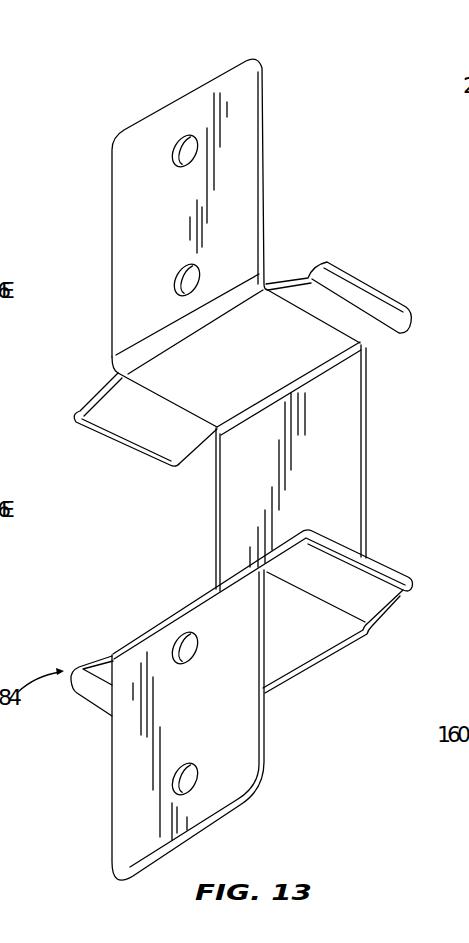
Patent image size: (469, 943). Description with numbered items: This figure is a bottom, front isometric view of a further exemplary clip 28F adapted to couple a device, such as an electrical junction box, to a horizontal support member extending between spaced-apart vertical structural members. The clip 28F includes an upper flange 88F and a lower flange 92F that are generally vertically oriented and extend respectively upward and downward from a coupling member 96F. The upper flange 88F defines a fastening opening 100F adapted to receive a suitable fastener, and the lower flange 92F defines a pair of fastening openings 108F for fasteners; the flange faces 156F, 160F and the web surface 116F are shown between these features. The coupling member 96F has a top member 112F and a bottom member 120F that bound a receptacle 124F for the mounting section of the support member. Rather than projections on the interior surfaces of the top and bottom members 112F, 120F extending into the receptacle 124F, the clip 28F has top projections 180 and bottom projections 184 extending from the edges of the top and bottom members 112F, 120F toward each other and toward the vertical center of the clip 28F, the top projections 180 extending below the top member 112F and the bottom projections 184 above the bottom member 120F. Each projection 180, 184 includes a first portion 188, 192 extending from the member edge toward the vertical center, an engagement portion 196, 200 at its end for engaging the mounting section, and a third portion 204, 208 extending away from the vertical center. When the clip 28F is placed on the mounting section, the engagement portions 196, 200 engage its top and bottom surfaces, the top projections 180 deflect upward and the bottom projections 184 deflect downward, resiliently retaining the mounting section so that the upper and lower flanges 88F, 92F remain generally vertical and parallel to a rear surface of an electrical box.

The clip 28F is at (330, 104).
The upper flange 88F is at (110, 149).
The lower flange 92F is at (267, 744).
The coupling member 96F is at (377, 398).
The fastening opening 100F is at (192, 137).
The fastening openings 108F is at (198, 657).
The top member 112F is at (206, 348).
The web surface 116F is at (324, 461).
The bottom member 120F is at (308, 632).
The receptacle 124F is at (176, 545).
The first plate surface 156F is at (213, 200).
The second plate surface 160F is at (137, 752).
The top projections 180 is at (70, 418).
The bottom projections 184 is at (380, 546).
The first portion 188 is at (187, 444).
The first portion 192 is at (297, 553).
The engagement portion 196 is at (123, 441).
The engagement portion 200 is at (311, 527).
The third portion 204 is at (83, 406).
The third portion 208 is at (393, 565).